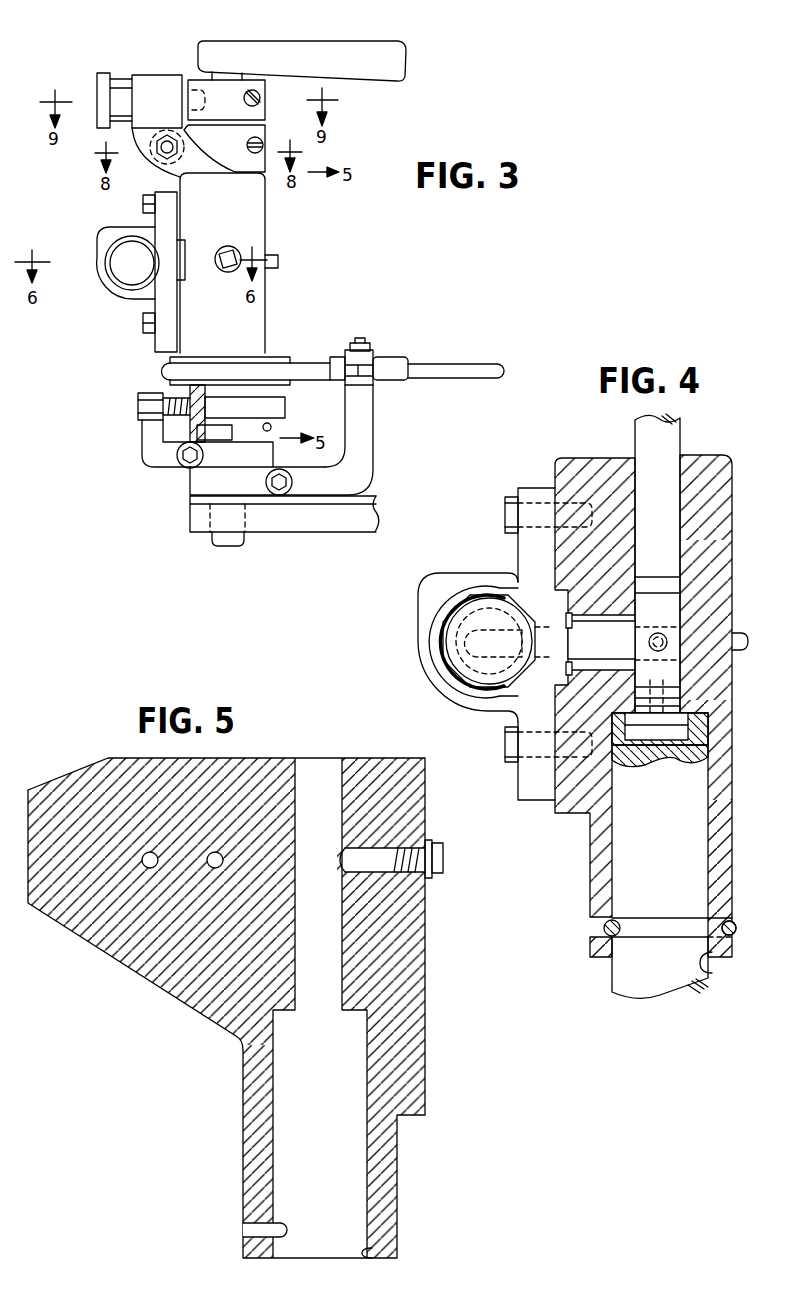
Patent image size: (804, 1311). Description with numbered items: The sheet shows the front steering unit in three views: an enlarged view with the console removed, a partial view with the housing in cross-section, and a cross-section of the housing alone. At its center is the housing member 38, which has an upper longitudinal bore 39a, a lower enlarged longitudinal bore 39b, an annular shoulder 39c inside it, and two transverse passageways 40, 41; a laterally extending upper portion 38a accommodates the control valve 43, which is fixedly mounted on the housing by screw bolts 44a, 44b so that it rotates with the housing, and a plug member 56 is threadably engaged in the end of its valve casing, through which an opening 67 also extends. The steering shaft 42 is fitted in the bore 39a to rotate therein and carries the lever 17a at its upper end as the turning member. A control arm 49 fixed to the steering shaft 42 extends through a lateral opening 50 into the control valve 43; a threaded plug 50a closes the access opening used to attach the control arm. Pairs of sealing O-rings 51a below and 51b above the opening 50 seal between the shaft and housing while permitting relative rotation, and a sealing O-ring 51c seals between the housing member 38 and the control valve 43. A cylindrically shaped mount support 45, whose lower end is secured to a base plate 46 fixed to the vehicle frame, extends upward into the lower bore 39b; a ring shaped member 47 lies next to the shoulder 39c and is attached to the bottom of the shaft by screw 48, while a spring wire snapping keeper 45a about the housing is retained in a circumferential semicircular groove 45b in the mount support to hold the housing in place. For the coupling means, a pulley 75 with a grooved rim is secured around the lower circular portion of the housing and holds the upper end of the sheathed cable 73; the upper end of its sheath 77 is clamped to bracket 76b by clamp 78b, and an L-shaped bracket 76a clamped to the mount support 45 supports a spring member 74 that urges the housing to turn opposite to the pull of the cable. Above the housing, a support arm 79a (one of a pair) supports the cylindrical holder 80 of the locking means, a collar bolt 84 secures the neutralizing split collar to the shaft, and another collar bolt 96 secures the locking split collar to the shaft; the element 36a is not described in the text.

In FIG. 3, the lever 17a is at (398, 49).
In FIG. 3, the cylindrical holder 80 is at (153, 83).
In FIG. 3, the steering shaft 42 is at (240, 76).
In FIG. 4, the steering shaft 42 is at (676, 444).
In FIG. 3, the collar bolt 96 is at (258, 100).
In FIG. 3, the collar bolt 84 is at (247, 147).
In FIG. 3, the support arm 79a is at (150, 156).
In FIG. 3, the housing member 38 is at (267, 238).
In FIG. 4, the housing member 38 is at (734, 752).
In FIG. 5, the housing member 38 is at (426, 1018).
In FIG. 3, the stop pin 36a is at (274, 268).
In FIG. 4, the stop pin 36a is at (745, 631).
In FIG. 3, the threaded plug 50a is at (231, 247).
In FIG. 5, the threaded plug 50a is at (434, 879).
In FIG. 3, the control valve 43 is at (104, 288).
In FIG. 4, the control valve 43 is at (420, 641).
In FIG. 3, the screw bolt 44a is at (143, 205).
In FIG. 4, the screw bolt 44a is at (513, 533).
In FIG. 3, the screw bolt 44b is at (143, 322).
In FIG. 4, the screw bolt 44b is at (508, 760).
In FIG. 3, the pulley 75 is at (168, 383).
In FIG. 3, the sheathed cable 73 is at (310, 363).
In FIG. 3, the clamp 78b is at (360, 346).
In FIG. 3, the sheath 77 is at (398, 362).
In FIG. 3, the spring member 74 is at (138, 416).
In FIG. 3, the L-shaped bracket 76a is at (142, 455).
In FIG. 3, the bracket 76b is at (373, 477).
In FIG. 3, the mount support 45 is at (208, 500).
In FIG. 4, the mount support 45 is at (614, 990).
In FIG. 3, the base plate 46 is at (298, 528).
In FIG. 4, the upper longitudinal bore 39a is at (635, 460).
In FIG. 5, the upper longitudinal bore 39a is at (302, 773).
In FIG. 4, the sealing O-rings 51b is at (682, 595).
In FIG. 4, the control arm 49 is at (616, 653).
In FIG. 4, the lateral opening 50 is at (584, 619).
In FIG. 4, the opening 67 is at (562, 684).
In FIG. 4, the sealing O-ring 51c is at (557, 688).
In FIG. 4, the sealing O-rings 51a is at (682, 699).
In FIG. 4, the ring shaped member 47 is at (679, 742).
In FIG. 4, the screw 48 is at (643, 764).
In FIG. 4, the annular shoulder 39c is at (703, 709).
In FIG. 5, the annular shoulder 39c is at (331, 1039).
In FIG. 4, the plug member 56 is at (454, 660).
In FIG. 4, the circumferential semicircular groove 45b is at (668, 928).
In FIG. 4, the spring wire snapping keeper 45a is at (737, 923).
In FIG. 4, the lower enlarged longitudinal bore 39b is at (712, 973).
In FIG. 5, the lower enlarged longitudinal bore 39b is at (367, 1257).
In FIG. 5, the laterally extending upper portion 38a is at (140, 978).
In FIG. 5, the transverse passageway 41 is at (152, 854).
In FIG. 5, the transverse passageway 40 is at (217, 853).